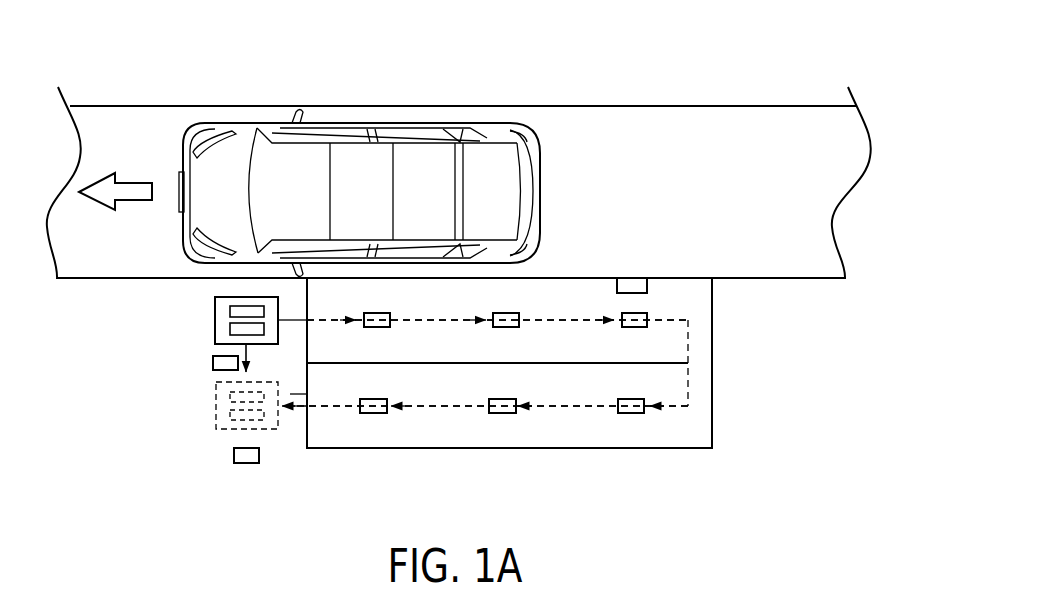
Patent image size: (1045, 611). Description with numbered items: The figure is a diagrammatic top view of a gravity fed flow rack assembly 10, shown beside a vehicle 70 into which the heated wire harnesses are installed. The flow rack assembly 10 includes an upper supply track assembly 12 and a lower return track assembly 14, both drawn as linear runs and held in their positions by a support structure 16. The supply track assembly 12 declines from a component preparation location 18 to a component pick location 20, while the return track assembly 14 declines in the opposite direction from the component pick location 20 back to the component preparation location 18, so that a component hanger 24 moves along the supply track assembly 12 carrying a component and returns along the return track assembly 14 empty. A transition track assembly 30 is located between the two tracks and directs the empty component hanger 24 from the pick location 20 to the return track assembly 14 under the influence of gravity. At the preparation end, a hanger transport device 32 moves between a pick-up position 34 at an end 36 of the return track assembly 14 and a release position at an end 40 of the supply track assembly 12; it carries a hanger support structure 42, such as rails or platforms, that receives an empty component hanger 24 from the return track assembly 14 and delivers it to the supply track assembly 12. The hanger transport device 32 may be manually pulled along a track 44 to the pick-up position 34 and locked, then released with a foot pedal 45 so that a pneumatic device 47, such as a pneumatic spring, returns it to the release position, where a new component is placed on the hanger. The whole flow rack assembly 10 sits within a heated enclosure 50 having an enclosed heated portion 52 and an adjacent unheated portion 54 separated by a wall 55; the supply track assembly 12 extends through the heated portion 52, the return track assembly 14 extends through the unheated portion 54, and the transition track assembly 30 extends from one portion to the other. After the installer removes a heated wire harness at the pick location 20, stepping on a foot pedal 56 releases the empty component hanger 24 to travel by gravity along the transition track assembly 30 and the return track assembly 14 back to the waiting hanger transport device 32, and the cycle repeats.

The flow rack assembly 10 is at (578, 363).
The supply track assembly 12 is at (497, 269).
The return track assembly 14 is at (484, 461).
The support structure 16 is at (516, 468).
The component preparation location 18 is at (307, 252).
The component pick location 20 is at (521, 224).
The component hanger 24 is at (378, 313).
The transition track assembly 30 is at (741, 381).
The hanger transport device 32 is at (212, 378).
The pick-up position 34 is at (342, 378).
The end of the return track assembly 36 is at (297, 320).
The end of the supply track assembly 40 is at (292, 410).
The hanger support structure 42 is at (228, 328).
The track 44 is at (275, 362).
The foot pedal 45 is at (247, 463).
The pneumatic device 47 is at (213, 363).
The heated enclosure 50 is at (763, 338).
The heated portion 52 is at (497, 257).
The unheated portion 54 is at (497, 466).
The wall 55 is at (498, 363).
The foot pedal 56 is at (640, 276).
The vehicle 70 is at (459, 140).